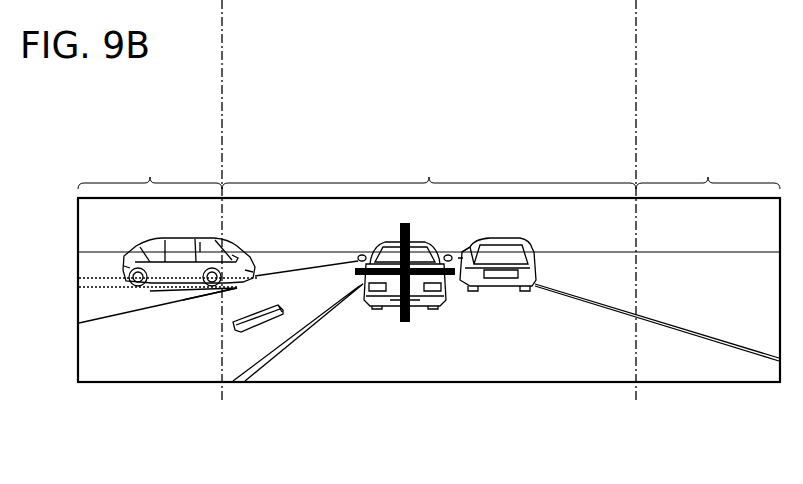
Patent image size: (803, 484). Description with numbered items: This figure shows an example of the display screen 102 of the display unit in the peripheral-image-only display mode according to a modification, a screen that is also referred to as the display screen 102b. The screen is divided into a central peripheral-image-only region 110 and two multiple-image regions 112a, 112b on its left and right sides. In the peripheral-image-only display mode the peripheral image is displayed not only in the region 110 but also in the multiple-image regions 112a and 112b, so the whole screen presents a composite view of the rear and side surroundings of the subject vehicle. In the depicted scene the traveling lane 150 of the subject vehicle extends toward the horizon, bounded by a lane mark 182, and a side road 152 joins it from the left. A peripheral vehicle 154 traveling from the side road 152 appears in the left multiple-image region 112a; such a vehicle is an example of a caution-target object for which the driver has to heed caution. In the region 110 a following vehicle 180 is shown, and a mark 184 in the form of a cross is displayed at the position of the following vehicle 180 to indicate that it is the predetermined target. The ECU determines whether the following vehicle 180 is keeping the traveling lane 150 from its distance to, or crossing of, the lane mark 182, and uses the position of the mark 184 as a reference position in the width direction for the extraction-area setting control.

The display screen 102 is at (124, 101).
The display screen 102b is at (180, 101).
The peripheral-image-only region 110 is at (429, 170).
The multiple-image region 112a is at (150, 170).
The multiple-image region 112b is at (708, 170).
The traveling lane 150 is at (333, 368).
The side road 152 is at (187, 285).
The peripheral vehicle 154 is at (157, 266).
The following vehicle 180 is at (378, 298).
The lane mark 182 is at (278, 352).
The mark 184 is at (410, 320).